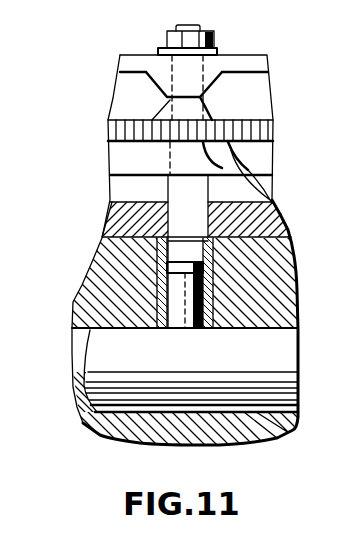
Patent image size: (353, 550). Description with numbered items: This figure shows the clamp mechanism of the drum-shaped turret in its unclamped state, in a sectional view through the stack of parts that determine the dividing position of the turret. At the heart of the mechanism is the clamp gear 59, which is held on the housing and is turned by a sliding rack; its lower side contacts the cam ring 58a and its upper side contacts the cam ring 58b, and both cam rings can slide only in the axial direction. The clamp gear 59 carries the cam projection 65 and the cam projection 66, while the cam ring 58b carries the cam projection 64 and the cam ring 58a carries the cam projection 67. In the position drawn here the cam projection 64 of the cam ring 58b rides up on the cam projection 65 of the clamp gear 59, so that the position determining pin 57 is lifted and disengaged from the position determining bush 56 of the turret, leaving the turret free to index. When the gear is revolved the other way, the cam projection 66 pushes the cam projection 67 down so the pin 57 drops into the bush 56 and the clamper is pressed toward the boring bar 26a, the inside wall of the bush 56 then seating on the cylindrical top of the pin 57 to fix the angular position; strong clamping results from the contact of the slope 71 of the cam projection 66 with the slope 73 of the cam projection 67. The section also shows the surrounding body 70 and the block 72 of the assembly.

The boring bar 26a is at (197, 361).
The position determining bush 56 is at (178, 300).
The position determining pin 57 is at (205, 175).
The cam ring 58a is at (128, 170).
The cam ring 58b is at (250, 67).
The clamp gear 59 is at (112, 131).
The cam projection 64 is at (200, 78).
The cam projection 65 is at (168, 110).
The cam projection 66 is at (260, 153).
The cam projection 67 is at (183, 162).
The outer boot 70 is at (280, 210).
The slope 71 is at (272, 183).
The bearing block 72 is at (178, 224).
The slope 73 is at (185, 142).